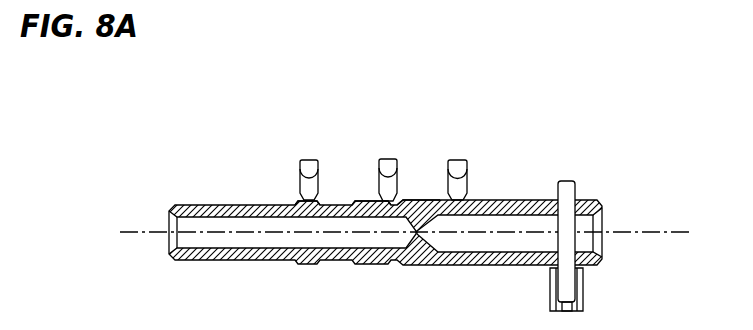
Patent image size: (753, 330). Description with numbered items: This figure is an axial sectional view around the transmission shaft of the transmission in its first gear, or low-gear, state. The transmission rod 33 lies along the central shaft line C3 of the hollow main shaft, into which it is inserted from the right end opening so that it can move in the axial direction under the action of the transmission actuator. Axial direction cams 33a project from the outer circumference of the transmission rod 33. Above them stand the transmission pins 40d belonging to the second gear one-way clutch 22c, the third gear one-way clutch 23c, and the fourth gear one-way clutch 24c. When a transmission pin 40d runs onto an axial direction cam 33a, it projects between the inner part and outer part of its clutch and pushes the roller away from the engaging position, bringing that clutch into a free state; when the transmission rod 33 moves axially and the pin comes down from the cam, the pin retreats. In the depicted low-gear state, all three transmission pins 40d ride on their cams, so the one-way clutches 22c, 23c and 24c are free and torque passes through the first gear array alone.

The transmission rod 33 is at (528, 200).
The axial direction cam 33a is at (306, 203).
The transmission pin 40d is at (416, 113).
The second gear one-way clutch 22c is at (300, 118).
The third gear one-way clutch 23c is at (412, 113).
The fourth gear one-way clutch 24c is at (505, 130).
The central shaft line C3 is at (675, 232).